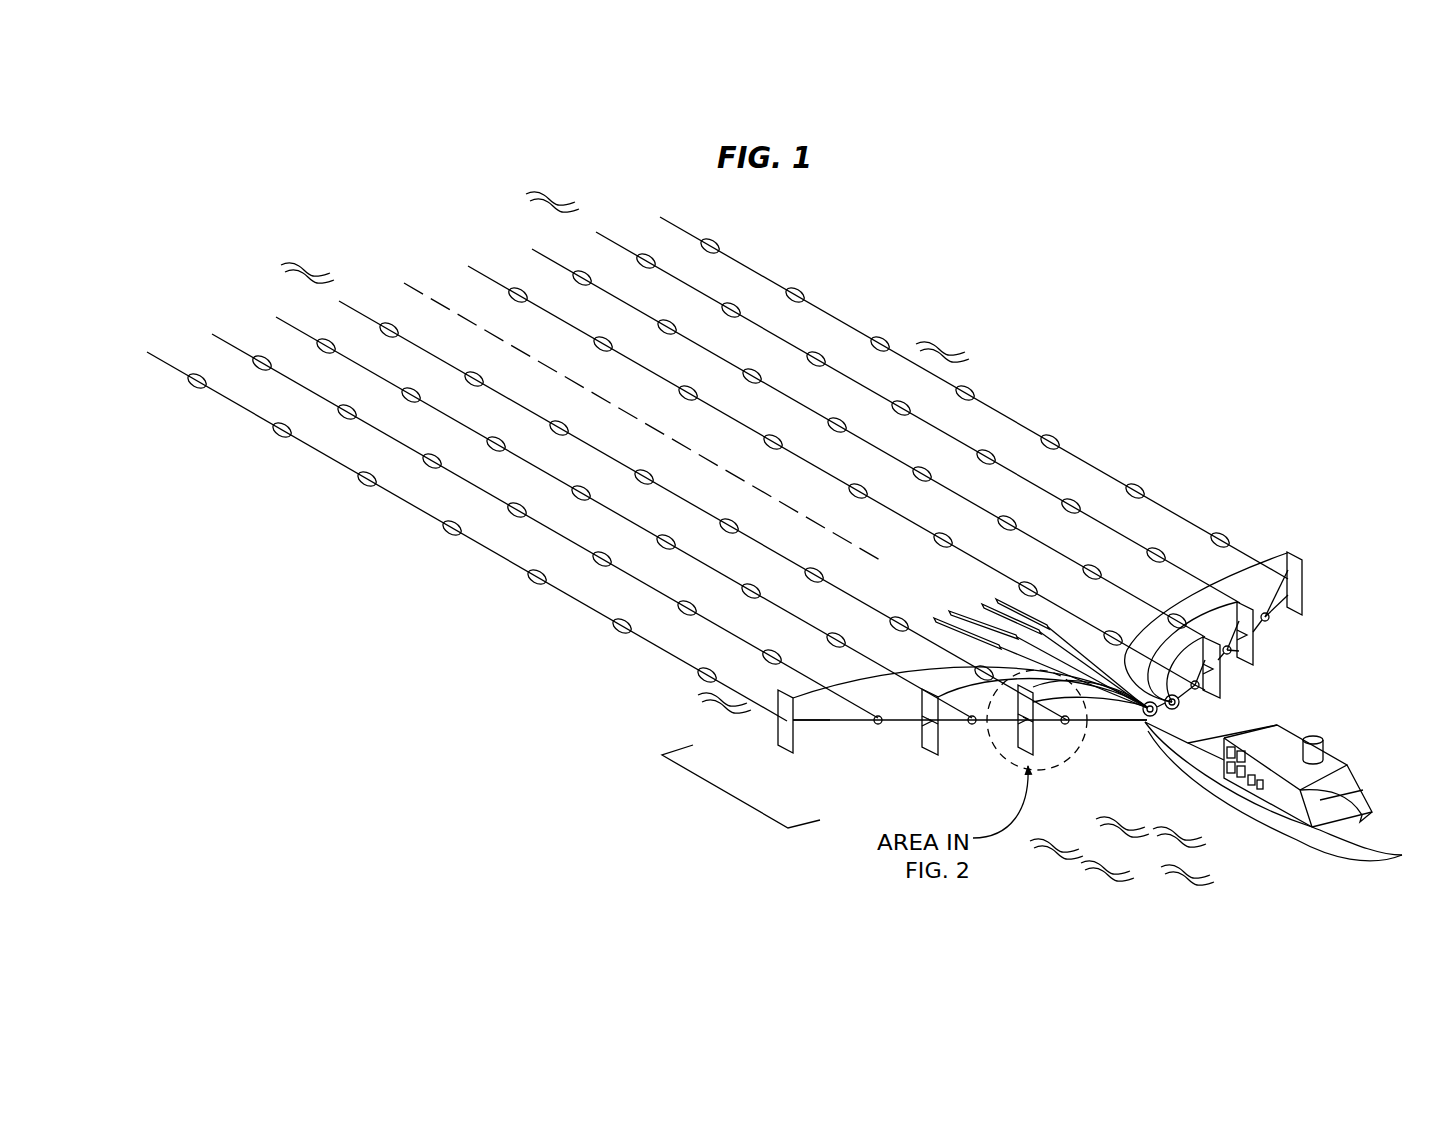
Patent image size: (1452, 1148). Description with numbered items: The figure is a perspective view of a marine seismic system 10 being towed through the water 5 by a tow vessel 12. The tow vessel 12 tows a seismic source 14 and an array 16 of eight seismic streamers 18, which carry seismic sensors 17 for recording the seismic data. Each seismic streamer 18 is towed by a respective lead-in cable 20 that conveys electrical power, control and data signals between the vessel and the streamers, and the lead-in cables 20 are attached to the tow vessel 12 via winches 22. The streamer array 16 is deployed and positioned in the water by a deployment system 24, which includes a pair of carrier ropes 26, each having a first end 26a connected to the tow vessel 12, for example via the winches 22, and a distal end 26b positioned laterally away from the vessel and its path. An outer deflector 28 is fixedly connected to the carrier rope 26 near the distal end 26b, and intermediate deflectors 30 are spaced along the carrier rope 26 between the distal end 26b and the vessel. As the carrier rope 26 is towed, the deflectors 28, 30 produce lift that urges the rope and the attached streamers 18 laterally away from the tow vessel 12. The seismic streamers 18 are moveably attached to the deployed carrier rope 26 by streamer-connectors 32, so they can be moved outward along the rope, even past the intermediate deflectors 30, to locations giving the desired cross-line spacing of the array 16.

The water 5 is at (1122, 851).
The marine seismic system 10 is at (1026, 331).
The tow vessel 12 is at (1347, 770).
The seismic source 14 is at (981, 594).
The array of seismic streamers 16 is at (233, 303).
The seismic sensors 17 is at (540, 578).
The seismic streamers 18 is at (390, 438).
The lead-in cable 20 is at (982, 692).
The winches 22 is at (1178, 718).
The deployment system 24 is at (725, 792).
The carrier rope 26 is at (842, 722).
The first end of carrier rope 26a is at (1145, 722).
The distal end of carrier rope 26b is at (802, 722).
The outer deflector 28 is at (778, 732).
The intermediate deflector 30 is at (1008, 738).
The streamer-connector 32 is at (880, 725).